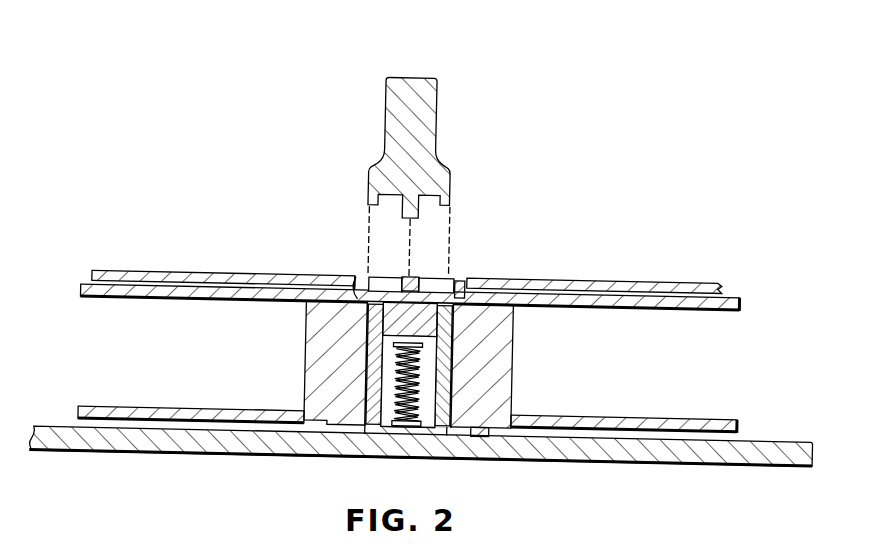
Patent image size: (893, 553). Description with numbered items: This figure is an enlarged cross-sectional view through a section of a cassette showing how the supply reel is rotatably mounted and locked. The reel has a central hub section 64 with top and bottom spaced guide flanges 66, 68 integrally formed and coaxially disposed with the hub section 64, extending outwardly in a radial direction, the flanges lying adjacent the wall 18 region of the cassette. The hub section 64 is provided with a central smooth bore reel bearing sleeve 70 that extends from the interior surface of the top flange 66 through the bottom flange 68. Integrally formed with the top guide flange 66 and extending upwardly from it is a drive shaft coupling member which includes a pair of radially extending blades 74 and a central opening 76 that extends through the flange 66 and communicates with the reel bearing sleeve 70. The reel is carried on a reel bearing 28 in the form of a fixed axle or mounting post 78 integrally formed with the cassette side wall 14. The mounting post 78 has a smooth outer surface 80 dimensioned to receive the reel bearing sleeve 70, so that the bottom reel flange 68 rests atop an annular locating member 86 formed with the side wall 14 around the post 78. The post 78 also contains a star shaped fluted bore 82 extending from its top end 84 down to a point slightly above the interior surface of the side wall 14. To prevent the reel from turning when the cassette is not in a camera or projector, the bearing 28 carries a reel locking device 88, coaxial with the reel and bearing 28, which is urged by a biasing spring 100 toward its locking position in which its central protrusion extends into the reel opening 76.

The cassette side wall 14 is at (674, 452).
The upper plate 18 is at (640, 277).
The reel bearing 28 is at (442, 452).
The central hub section 64 is at (448, 391).
The top guide flange 66 is at (739, 295).
The bottom guide flange 68 is at (735, 415).
The reel bearing sleeve 70 is at (342, 455).
The radially extending blades 74 is at (378, 283).
The central opening 76 is at (414, 280).
The mounting post 78 is at (460, 295).
The smooth outer surface 80 is at (428, 360).
The star shaped fluted bore 82 is at (442, 374).
The top end 84 is at (354, 292).
The annular locating member 86 is at (486, 437).
The reel locking device 88 is at (364, 331).
The locking device biasing spring 100 is at (452, 405).